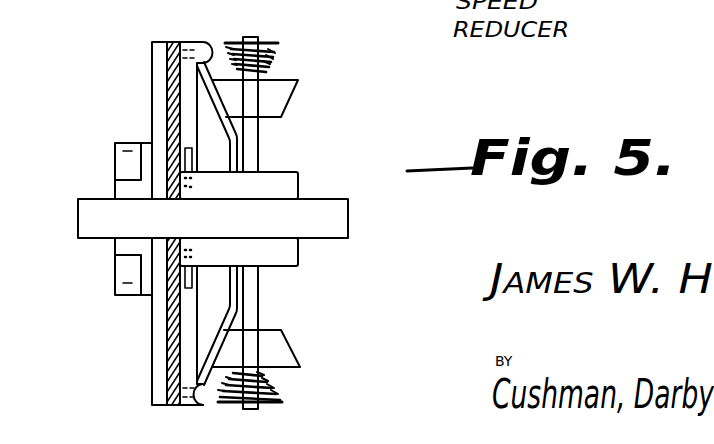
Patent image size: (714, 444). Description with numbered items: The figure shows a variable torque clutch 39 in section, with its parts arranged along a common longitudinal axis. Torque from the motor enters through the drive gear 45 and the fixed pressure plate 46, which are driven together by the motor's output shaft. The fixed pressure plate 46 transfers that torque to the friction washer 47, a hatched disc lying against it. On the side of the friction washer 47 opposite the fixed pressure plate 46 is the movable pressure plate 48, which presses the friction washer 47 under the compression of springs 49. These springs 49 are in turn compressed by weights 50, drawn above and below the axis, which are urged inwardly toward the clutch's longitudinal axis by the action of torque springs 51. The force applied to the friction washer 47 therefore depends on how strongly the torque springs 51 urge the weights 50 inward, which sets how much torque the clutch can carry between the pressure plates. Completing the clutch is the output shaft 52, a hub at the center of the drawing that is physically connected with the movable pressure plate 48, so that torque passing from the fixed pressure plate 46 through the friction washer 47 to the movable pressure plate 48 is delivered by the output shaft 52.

The variable torque clutch 39 is at (76, 159).
The drive gear 45 is at (116, 143).
The fixed pressure plate 46 is at (152, 329).
The friction washer 47 is at (177, 42).
The movable pressure plate 48 is at (195, 42).
The springs 49 is at (226, 158).
The weights 50 is at (289, 101).
The torque springs 51 is at (278, 54).
The output shaft 52 is at (300, 184).